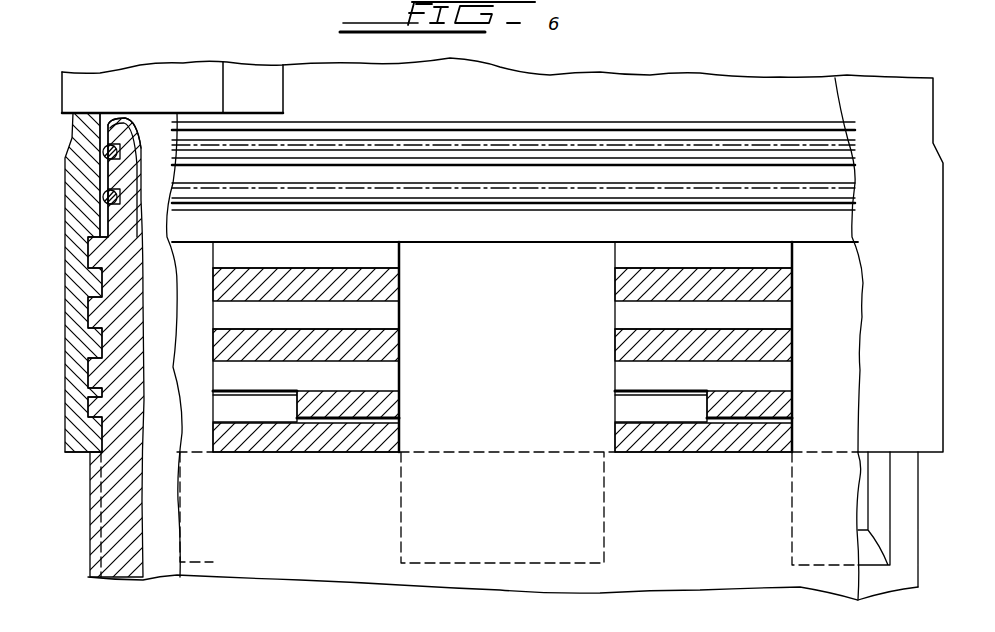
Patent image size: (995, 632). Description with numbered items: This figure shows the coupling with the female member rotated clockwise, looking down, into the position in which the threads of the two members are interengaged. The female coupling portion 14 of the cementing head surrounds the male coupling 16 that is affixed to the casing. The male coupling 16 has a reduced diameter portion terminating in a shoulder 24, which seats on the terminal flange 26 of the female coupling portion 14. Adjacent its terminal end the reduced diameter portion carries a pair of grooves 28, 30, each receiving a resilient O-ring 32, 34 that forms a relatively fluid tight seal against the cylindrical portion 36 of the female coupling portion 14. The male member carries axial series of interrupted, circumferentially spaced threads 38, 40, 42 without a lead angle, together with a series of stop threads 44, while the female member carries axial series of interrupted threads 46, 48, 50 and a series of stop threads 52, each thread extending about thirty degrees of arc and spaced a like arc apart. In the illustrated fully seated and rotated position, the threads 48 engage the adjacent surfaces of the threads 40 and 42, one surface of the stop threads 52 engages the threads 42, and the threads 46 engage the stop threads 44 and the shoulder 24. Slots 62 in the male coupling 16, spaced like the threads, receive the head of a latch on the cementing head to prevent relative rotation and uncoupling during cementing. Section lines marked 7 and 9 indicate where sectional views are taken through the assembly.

The female coupling portion 14 is at (65, 223).
The male coupling 16 is at (113, 468).
The shoulder 24 is at (235, 451).
The terminal flange 26 is at (68, 455).
The groove 28 is at (142, 178).
The groove 30 is at (118, 193).
The O-ring 32 is at (537, 196).
The O-ring 34 is at (432, 150).
The cylindrical portion 36 is at (108, 167).
The threads 38 is at (375, 266).
The threads 40 is at (375, 326).
The threads 42 is at (375, 386).
The stop threads 44 is at (256, 419).
The threads 46 is at (385, 438).
The threads 48 is at (380, 352).
The threads 50 is at (380, 288).
The stop threads 52 is at (382, 407).
The slots 62 is at (100, 530).
The section line 7- 7 is at (48, 320).
The section line 9- 9 is at (532, 437).